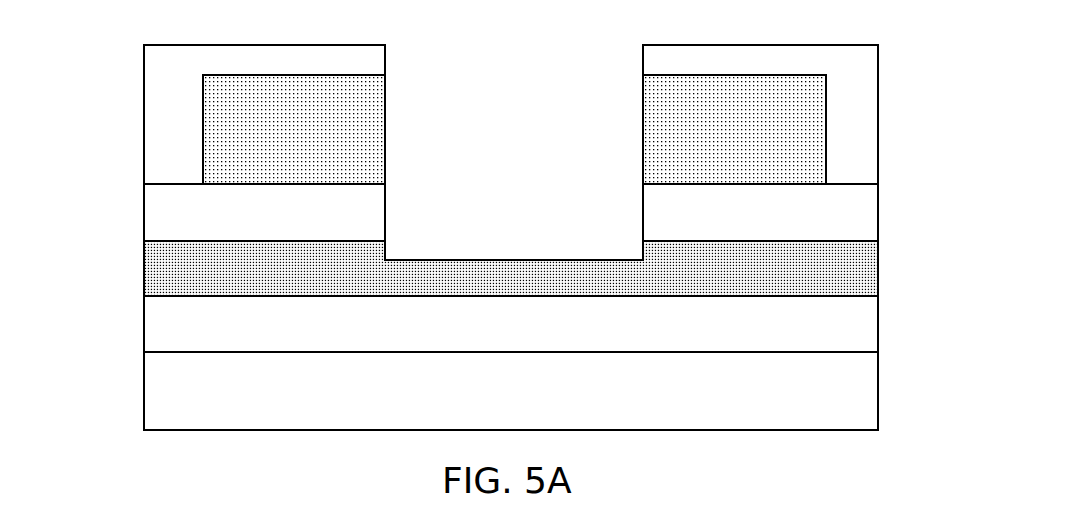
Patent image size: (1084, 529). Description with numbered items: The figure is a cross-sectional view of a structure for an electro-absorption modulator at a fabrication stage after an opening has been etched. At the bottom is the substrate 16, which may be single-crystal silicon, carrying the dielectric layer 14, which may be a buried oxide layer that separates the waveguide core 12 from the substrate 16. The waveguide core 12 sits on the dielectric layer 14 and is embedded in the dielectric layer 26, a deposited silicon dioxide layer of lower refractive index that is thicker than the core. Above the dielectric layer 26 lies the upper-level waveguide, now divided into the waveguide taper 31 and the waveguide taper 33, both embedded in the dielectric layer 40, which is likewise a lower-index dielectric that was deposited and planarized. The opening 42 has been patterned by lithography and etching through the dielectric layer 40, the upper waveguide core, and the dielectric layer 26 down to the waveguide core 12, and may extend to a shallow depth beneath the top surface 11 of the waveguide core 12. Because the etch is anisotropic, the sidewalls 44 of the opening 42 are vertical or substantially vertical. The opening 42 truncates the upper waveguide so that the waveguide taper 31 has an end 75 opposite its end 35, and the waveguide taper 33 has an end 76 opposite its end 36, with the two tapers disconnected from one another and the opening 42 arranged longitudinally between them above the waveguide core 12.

The dielectric layer 40 is at (181, 76).
The waveguide taper 31 is at (248, 131).
The end 35 is at (202, 170).
The waveguide taper 33 is at (777, 120).
The end 36 is at (826, 163).
The dielectric layer 26 is at (197, 218).
The opening 42 is at (512, 148).
The end 75 is at (385, 97).
The end 76 is at (643, 97).
The sidewalls 44 is at (643, 213).
The waveguide core 12 is at (197, 272).
The top surface 11 is at (803, 241).
The dielectric layer 14 is at (197, 323).
The substrate 16 is at (197, 393).